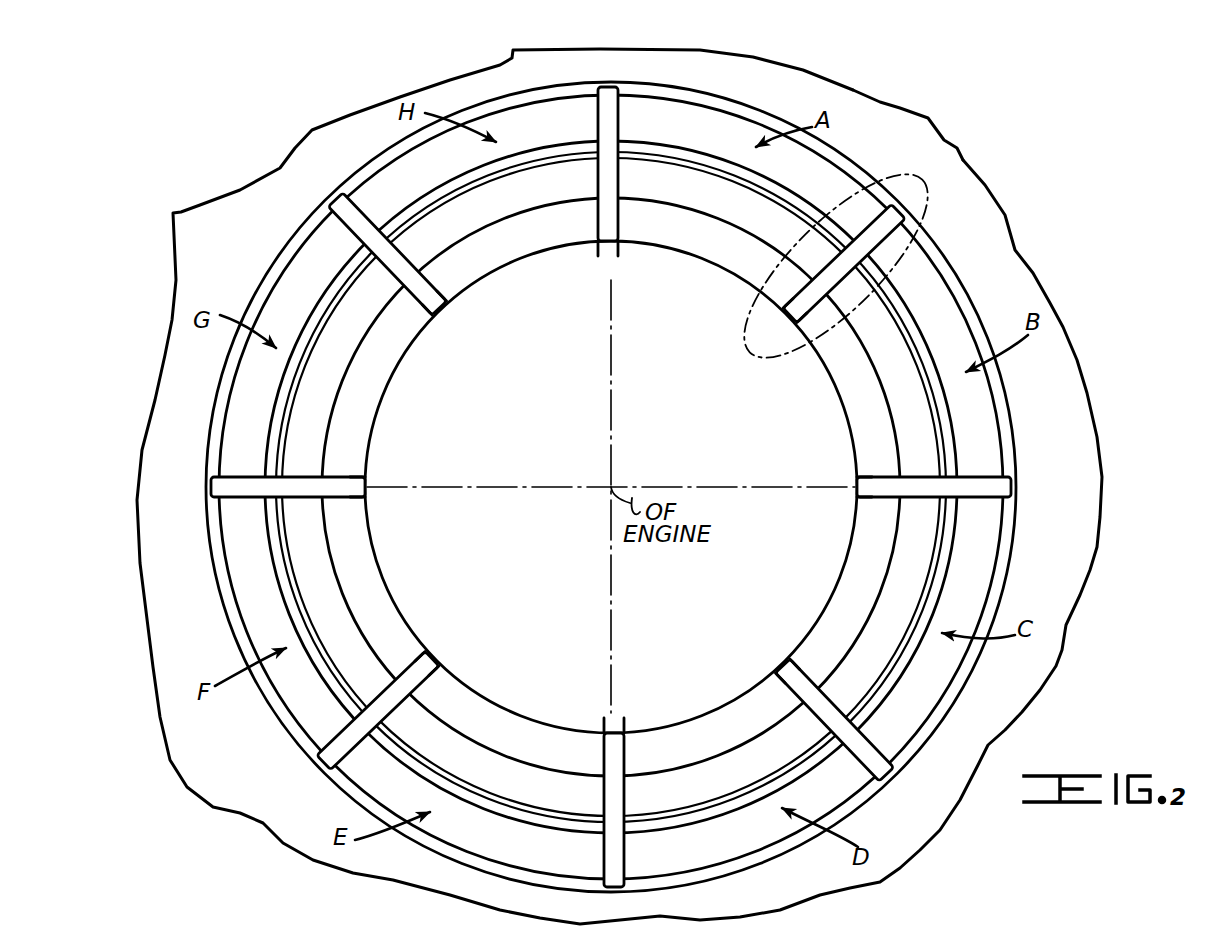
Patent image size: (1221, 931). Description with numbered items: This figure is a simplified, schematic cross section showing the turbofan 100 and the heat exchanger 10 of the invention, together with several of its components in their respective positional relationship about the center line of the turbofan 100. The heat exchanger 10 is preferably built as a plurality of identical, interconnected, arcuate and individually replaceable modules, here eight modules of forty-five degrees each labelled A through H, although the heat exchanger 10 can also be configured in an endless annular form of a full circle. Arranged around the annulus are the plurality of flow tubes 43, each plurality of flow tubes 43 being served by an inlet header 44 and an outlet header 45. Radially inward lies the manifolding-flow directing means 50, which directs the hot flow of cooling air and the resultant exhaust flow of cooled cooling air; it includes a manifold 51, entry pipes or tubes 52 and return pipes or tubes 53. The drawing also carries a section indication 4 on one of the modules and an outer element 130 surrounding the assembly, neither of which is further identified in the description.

The heat exchanger 10 is at (1038, 534).
The turbofan 100 is at (1022, 220).
The casing wall 130 is at (900, 108).
The flow tubes 43 is at (748, 142).
The inlet headers 44 is at (892, 202).
The outlet headers 45 is at (618, 98).
The manifolding-flow directing means 50 is at (525, 286).
The manifold 51 is at (524, 250).
The entry pipes 52 is at (436, 315).
The return pipes 53 is at (616, 243).
The section line 4- 4 is at (836, 266).